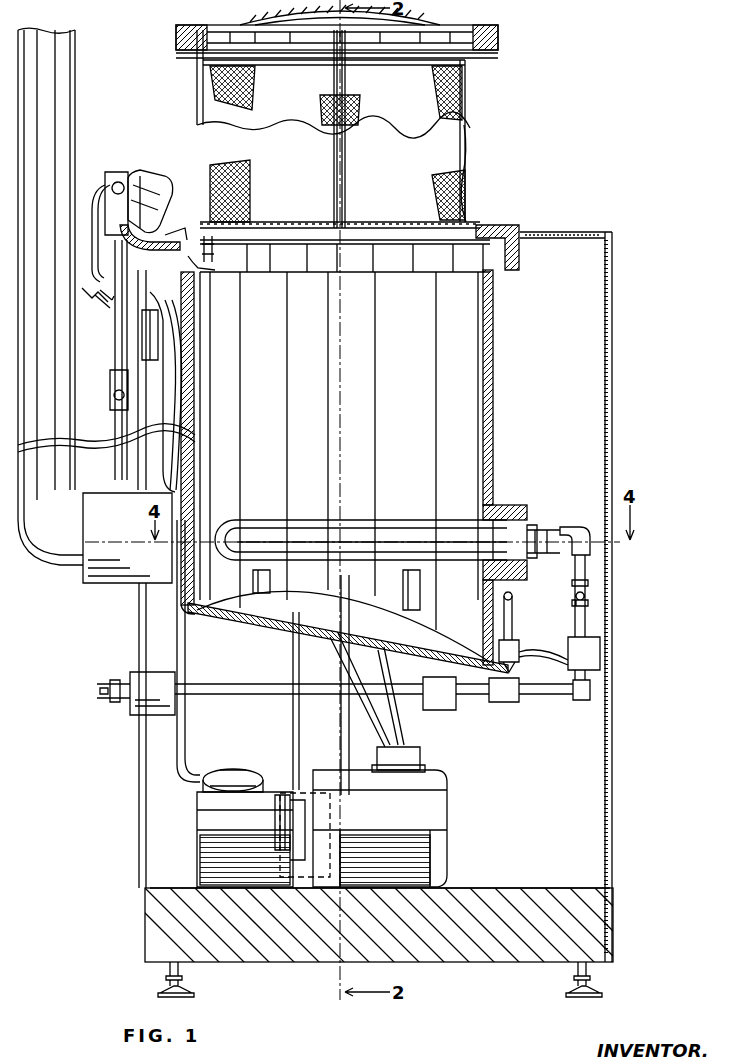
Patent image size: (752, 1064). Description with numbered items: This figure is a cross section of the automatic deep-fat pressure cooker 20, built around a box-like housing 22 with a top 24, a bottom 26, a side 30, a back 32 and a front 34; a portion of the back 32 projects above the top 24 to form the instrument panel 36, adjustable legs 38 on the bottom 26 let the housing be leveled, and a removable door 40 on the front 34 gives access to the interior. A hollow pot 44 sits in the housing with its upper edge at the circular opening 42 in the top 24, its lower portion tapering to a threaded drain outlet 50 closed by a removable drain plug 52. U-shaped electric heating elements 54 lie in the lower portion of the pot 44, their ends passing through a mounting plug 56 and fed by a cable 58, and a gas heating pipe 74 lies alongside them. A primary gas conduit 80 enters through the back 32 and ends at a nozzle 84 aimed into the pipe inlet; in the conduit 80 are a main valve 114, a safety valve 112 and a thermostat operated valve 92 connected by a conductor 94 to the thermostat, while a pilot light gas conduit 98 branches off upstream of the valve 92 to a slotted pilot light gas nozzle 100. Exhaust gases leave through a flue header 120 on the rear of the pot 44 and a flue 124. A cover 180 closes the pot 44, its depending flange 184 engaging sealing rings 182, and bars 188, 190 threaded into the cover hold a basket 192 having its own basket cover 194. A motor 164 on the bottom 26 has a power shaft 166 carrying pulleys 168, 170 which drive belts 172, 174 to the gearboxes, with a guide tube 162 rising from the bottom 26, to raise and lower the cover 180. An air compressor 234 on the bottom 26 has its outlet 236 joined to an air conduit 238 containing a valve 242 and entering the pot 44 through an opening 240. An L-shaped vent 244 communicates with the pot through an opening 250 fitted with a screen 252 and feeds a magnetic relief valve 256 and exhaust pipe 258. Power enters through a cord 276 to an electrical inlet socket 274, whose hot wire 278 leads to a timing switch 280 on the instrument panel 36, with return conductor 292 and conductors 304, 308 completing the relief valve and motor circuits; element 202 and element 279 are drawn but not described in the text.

The automatic deep-fat pressure cooker 20 is at (641, 252).
The housing 22 is at (607, 232).
The top 24 is at (582, 232).
The bottom 26 is at (590, 935).
The side 30 is at (590, 455).
The back 32 is at (137, 625).
The front 34 is at (613, 287).
The instrument panel 36 is at (165, 178).
The legs 38 is at (192, 984).
The door 40 is at (613, 410).
The opening 42 is at (485, 228).
The pot 44 is at (494, 378).
The drain outlet 50 is at (480, 655).
The drain plug 52 is at (519, 648).
The electric heating elements 54 is at (357, 520).
The mounting plug 56 is at (520, 505).
The cable 58 is at (540, 530).
The gas heating pipe 74 is at (205, 532).
The primary gas conduit 80 is at (115, 700).
The nozzle 84 is at (574, 528).
The thermostat operated valve 92 is at (600, 648).
The conductor 94 is at (530, 650).
The pilot light gas conduit 98 is at (512, 612).
The pilot light gas nozzle 100 is at (512, 592).
The safety valve 112 is at (452, 702).
The main valve 114 is at (140, 708).
The flue header 120 is at (85, 585).
The flue 124 is at (60, 115).
The guide tube 162 is at (340, 722).
The motor 164 is at (420, 862).
The power shaft 166 is at (310, 825).
The pulley 168 is at (302, 852).
The pulley 170 is at (272, 830).
The drive belt 172 is at (300, 650).
The belt 174 is at (268, 800).
The cover 180 is at (468, 28).
The sealing rings 182 is at (490, 232).
The depending flange 184 is at (498, 50).
The bar 188 is at (197, 110).
The bar 190 is at (345, 156).
The basket 192 is at (450, 186).
The basket cover 194 is at (465, 90).
The lid dome 202 is at (285, 30).
The air compressor 234 is at (240, 880).
The compressor outlet 236 is at (210, 772).
The air conduit 238 is at (178, 640).
The opening 240 is at (265, 272).
The valve 242 is at (178, 195).
The vent 244 is at (200, 300).
The opening 250 is at (215, 252).
The screen 252 is at (215, 268).
The magnetic relief valve 256 is at (125, 172).
The exhaust pipe 258 is at (112, 426).
The electrical inlet socket 274 is at (180, 332).
The cord 276 is at (88, 297).
The hot wire 278 is at (185, 325).
The bracket tab 279 is at (178, 210).
The timing switch 280 is at (135, 178).
The conductor 292 is at (188, 465).
The conductor 304 is at (92, 237).
The conductor 308 is at (405, 726).